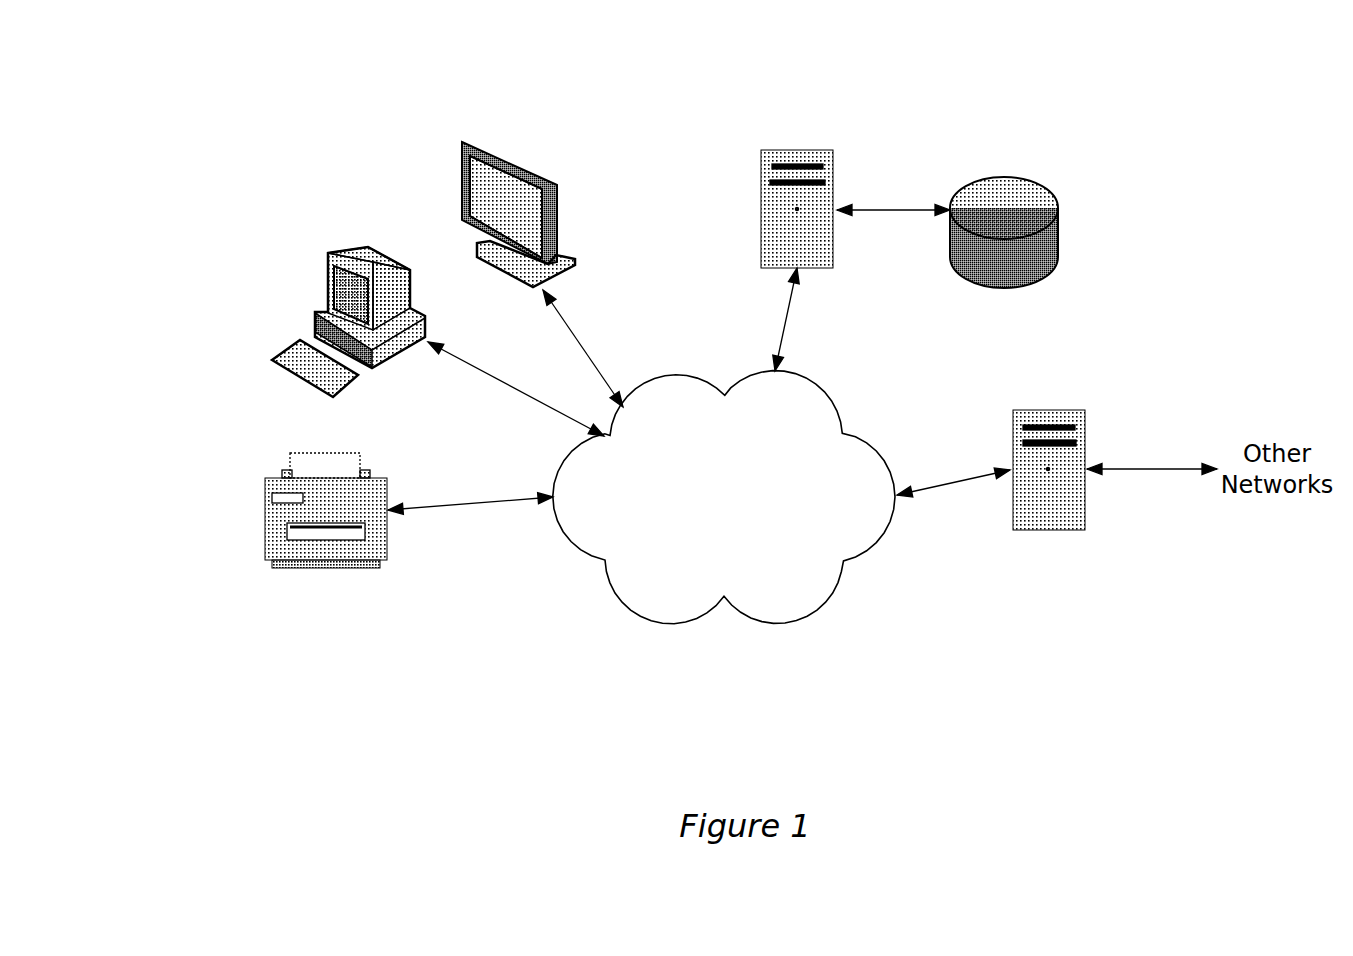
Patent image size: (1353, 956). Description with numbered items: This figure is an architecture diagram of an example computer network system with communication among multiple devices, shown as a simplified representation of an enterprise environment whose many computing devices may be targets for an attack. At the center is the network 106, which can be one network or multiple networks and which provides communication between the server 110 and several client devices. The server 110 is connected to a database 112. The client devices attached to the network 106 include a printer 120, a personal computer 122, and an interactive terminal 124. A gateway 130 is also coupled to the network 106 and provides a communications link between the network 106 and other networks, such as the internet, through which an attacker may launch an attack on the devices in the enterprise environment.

The network 106 is at (704, 526).
The server 110 is at (795, 148).
The database 112 is at (1033, 178).
The printer 120 is at (265, 510).
The personal computer 122 is at (352, 252).
The interactive terminal 124 is at (557, 187).
The gateway 130 is at (1048, 410).